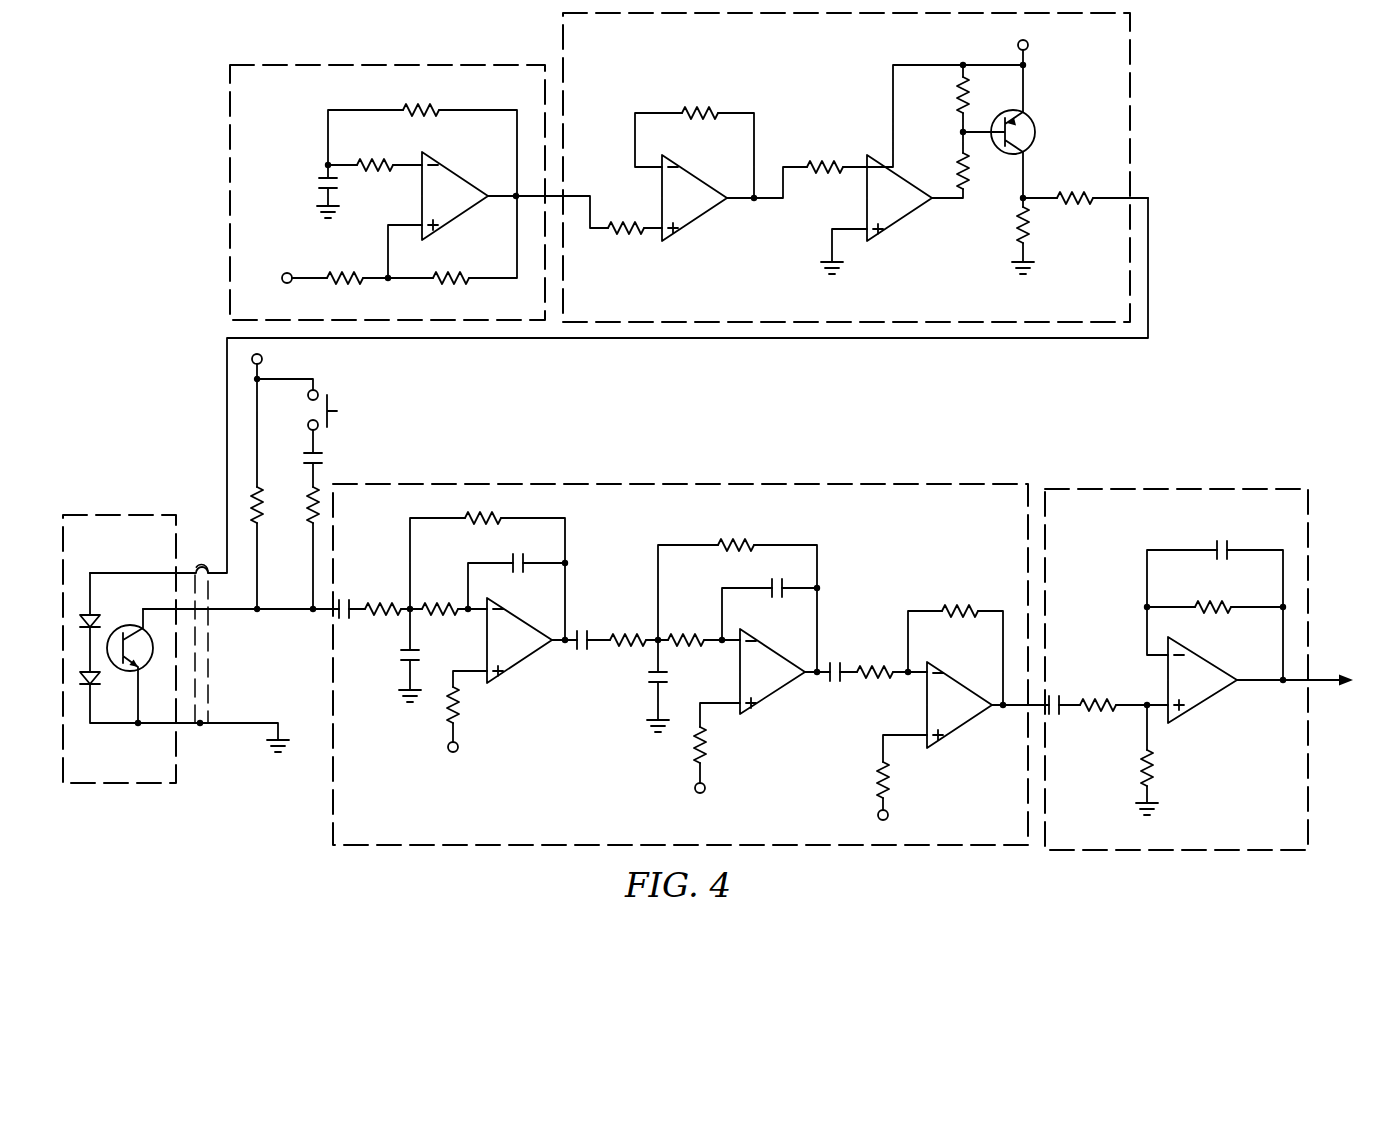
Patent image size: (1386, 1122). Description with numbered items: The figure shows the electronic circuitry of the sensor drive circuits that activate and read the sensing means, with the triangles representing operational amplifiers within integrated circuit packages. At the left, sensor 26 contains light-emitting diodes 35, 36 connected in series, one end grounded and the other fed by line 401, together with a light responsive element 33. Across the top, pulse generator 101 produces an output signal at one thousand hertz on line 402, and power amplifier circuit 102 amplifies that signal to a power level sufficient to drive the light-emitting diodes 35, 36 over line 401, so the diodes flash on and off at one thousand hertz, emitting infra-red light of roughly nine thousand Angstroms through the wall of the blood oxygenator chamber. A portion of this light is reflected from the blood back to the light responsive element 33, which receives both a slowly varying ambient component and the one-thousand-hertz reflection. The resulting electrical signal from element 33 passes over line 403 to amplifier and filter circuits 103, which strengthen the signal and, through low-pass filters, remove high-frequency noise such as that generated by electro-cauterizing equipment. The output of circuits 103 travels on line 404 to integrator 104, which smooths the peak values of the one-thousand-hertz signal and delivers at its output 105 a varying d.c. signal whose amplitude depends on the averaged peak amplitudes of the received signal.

The sensor 26 is at (176, 629).
The light responsive element 33 is at (143, 670).
The light-emitting diode 35 is at (93, 613).
The light-emitting diode 36 is at (97, 681).
The pulse generator 101 is at (420, 65).
The power amplifier circuit 102 is at (1130, 75).
The amplifier and filter circuits 103 is at (818, 485).
The integrator 104 is at (1140, 489).
The output 105 is at (1316, 680).
The line 401 is at (226, 383).
The line 402 is at (552, 194).
The line 403 is at (272, 609).
The line 404 is at (1033, 705).